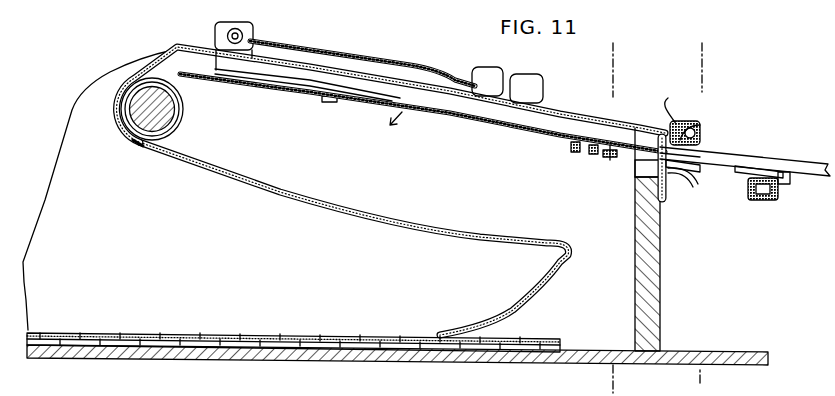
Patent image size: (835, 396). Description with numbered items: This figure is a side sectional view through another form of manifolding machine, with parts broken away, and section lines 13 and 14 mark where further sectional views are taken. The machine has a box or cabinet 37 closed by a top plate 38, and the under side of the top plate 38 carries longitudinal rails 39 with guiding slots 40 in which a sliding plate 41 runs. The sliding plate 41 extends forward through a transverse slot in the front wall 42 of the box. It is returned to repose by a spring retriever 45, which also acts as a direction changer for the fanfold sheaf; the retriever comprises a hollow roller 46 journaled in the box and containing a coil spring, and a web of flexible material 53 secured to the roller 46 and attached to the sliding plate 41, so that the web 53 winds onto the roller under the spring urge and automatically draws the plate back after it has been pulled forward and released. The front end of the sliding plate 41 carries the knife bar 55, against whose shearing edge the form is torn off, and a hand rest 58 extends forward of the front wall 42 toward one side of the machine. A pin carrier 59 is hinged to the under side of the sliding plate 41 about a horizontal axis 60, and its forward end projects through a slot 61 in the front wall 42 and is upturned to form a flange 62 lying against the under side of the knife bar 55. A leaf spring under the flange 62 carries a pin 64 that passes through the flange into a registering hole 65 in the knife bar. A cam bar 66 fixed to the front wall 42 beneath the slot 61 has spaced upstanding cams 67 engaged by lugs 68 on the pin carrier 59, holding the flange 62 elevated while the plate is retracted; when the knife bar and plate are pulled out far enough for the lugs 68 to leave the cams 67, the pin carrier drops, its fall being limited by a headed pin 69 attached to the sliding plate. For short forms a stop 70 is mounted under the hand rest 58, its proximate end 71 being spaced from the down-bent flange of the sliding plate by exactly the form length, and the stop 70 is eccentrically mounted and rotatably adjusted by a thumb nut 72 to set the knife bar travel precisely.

The section line 13- 13 is at (690, 385).
The section line 14- 14 is at (605, 45).
The box or cabinet 37 is at (418, 67).
The top plate 38 is at (312, 63).
The longitudinal rails 39 is at (258, 87).
The guiding slots 40 is at (290, 89).
The sliding plate 41 is at (466, 127).
The front wall 42 is at (662, 258).
The spring retriever 45 is at (197, 115).
The hollow roller 46 is at (136, 146).
The web of flexible material 53 is at (183, 128).
The knife bar 55 is at (704, 130).
The hand rest 58 is at (758, 156).
The pin carrier 59 is at (592, 153).
The horizontal axis 60 is at (572, 151).
The slot 61 is at (634, 173).
The flange 62 is at (711, 153).
The pin 64 is at (690, 120).
The registering hole 65 is at (668, 128).
The cam bar 66 is at (668, 195).
The upstanding cams 67 is at (673, 177).
The lugs 68 is at (695, 163).
The headed pin 69 is at (609, 157).
The stop 70 is at (784, 183).
The proximate end 71 is at (735, 174).
The thumb nut 72 is at (753, 200).